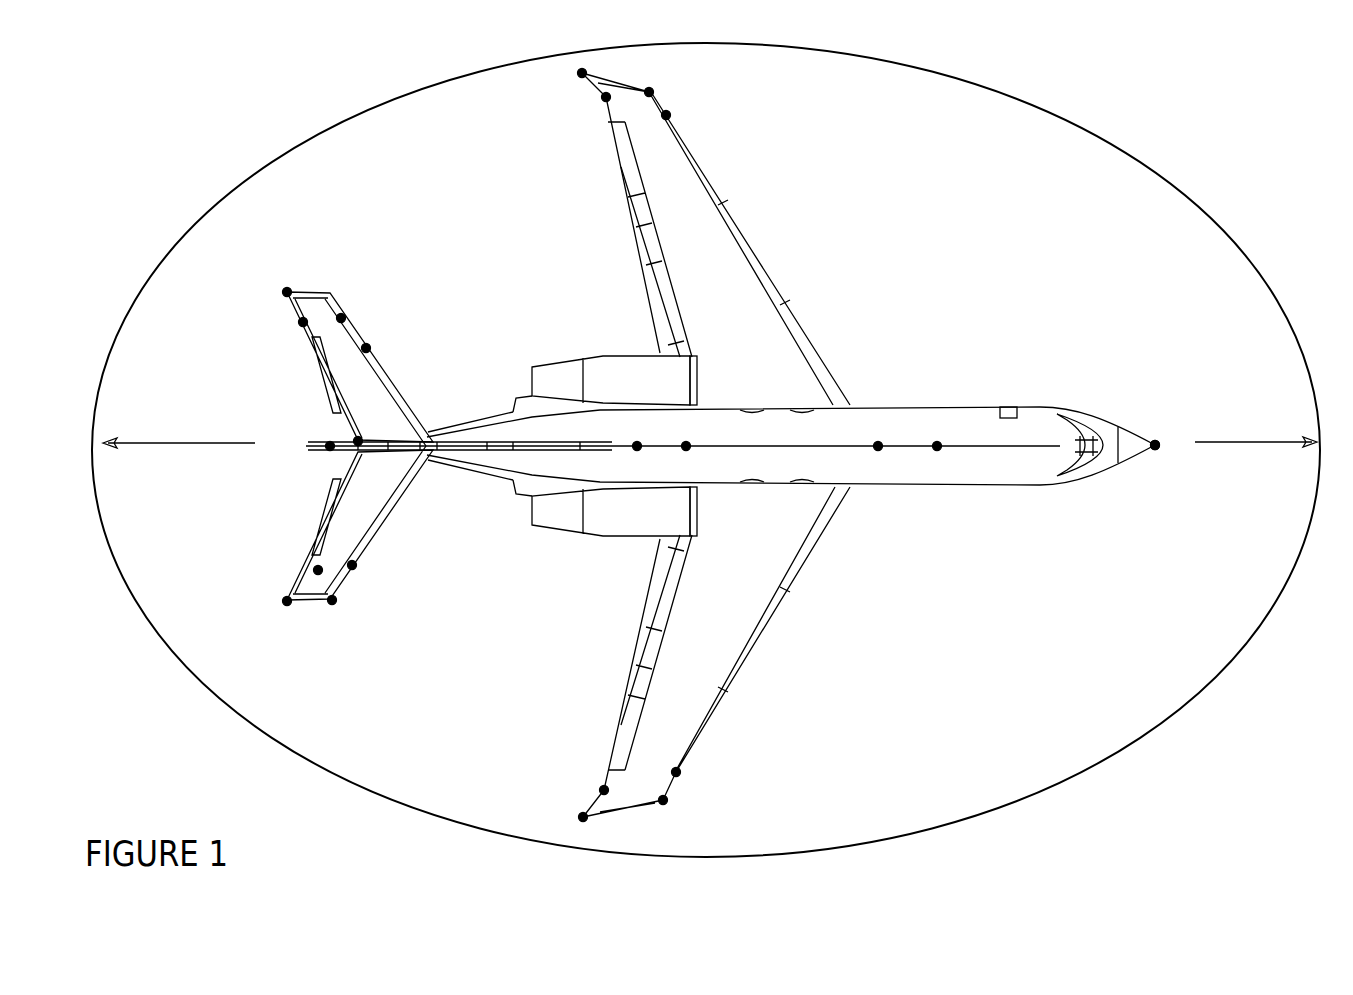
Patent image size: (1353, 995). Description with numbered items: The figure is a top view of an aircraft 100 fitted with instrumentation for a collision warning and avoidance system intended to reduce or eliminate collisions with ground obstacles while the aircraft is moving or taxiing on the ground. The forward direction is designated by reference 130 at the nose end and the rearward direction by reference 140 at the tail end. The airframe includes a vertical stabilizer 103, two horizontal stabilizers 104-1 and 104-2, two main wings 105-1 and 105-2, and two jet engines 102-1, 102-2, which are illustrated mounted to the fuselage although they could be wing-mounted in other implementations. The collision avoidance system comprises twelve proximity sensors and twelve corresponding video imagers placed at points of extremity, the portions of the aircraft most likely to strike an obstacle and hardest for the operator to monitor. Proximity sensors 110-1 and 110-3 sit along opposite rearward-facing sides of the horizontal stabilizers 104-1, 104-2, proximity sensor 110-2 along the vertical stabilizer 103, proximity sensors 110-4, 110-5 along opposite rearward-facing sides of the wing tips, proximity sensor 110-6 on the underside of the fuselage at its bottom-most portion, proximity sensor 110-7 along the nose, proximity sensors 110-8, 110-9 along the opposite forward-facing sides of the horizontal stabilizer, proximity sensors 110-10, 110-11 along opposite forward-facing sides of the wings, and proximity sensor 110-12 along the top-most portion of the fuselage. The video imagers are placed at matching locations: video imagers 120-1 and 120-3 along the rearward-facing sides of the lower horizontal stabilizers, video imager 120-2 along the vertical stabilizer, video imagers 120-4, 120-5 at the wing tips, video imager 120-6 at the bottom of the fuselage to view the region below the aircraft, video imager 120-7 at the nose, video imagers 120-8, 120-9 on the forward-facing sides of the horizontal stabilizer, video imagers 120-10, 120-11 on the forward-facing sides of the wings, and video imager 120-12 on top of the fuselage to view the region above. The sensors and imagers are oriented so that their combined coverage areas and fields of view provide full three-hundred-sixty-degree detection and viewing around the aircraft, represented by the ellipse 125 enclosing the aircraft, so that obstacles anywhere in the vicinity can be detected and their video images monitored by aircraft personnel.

The aircraft 100 is at (1143, 128).
The jet engine 102-1 is at (602, 356).
The jet engine 102-2 is at (603, 537).
The vertical stabilizer 103 is at (384, 446).
The horizontal stabilizer 104-1 is at (380, 398).
The horizontal stabilizer 104-2 is at (377, 502).
The main wing 105-1 is at (738, 262).
The main wing 105-2 is at (745, 620).
The proximity sensor 110-1 is at (288, 291).
The proximity sensor 110-2 is at (356, 440).
The proximity sensor 110-3 is at (287, 601).
The proximity sensor 110-4 is at (582, 75).
The proximity sensor 110-5 is at (583, 816).
The proximity sensor 110-6 is at (637, 451).
The proximity sensor 110-7 is at (1156, 448).
The proximity sensor 110-8 is at (367, 347).
The proximity sensor 110-9 is at (353, 566).
The proximity sensor 110-10 is at (650, 88).
The proximity sensor 110-11 is at (678, 773).
The proximity sensor 110-12 is at (878, 450).
The video imager 120-1 is at (303, 322).
The video imager 120-2 is at (330, 450).
The video imager 120-3 is at (318, 569).
The video imager 120-4 is at (605, 99).
The video imager 120-5 is at (604, 790).
The video imager 120-6 is at (690, 444).
The video imager 120-7 is at (1156, 444).
The video imager 120-8 is at (343, 317).
The video imager 120-9 is at (333, 601).
The video imager 120-10 is at (668, 113).
The video imager 120-11 is at (664, 803).
The video imager 120-12 is at (940, 440).
The ellipse 125 is at (1162, 722).
The forward direction 130 is at (1255, 441).
The rearward direction 140 is at (142, 442).